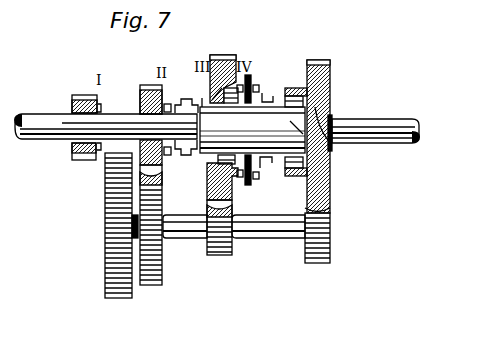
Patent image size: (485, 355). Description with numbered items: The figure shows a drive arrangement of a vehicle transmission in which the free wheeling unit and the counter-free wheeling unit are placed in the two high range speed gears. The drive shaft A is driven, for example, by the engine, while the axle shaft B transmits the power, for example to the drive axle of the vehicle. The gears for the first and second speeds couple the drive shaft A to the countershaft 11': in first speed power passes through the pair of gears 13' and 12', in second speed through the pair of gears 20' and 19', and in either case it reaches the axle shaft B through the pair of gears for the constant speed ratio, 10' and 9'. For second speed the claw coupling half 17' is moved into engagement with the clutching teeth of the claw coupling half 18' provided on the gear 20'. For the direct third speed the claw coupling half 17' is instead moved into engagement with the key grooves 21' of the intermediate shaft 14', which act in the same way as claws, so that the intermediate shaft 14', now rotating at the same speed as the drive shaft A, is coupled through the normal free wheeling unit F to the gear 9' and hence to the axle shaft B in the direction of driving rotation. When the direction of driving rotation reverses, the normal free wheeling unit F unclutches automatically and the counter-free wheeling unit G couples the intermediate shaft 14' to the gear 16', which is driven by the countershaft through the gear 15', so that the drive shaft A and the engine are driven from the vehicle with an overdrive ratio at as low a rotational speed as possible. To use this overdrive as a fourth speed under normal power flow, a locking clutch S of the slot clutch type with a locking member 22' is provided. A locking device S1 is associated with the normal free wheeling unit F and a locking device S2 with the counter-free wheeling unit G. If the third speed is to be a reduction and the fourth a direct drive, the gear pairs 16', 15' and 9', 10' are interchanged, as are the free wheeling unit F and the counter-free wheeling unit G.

The drive shaft A is at (42, 132).
The axle shaft B is at (388, 128).
The first speed gear 13' is at (85, 114).
The second speed gear 20' is at (145, 113).
The claw coupling half 17' is at (181, 88).
The claw coupling half 18' is at (180, 164).
The key grooves 21' is at (245, 147).
The overdrive gear 16' is at (226, 66).
The counter-free wheeling unit G is at (222, 88).
The locking member 22' is at (260, 117).
The locking clutch S is at (268, 97).
The locking device for the normal free wheeling unit S1 is at (239, 178).
The locking device for the counter-free wheeling unit S2 is at (256, 180).
The countershaft overdrive gear 15' is at (222, 219).
The countershaft 11' is at (218, 244).
The first speed countershaft gear 12' is at (119, 239).
The second speed countershaft gear 19' is at (154, 243).
The constant ratio gear 9' is at (319, 121).
The intermediate shaft 14' is at (338, 141).
The normal free wheeling unit F is at (330, 93).
The constant ratio countershaft gear 10' is at (319, 250).